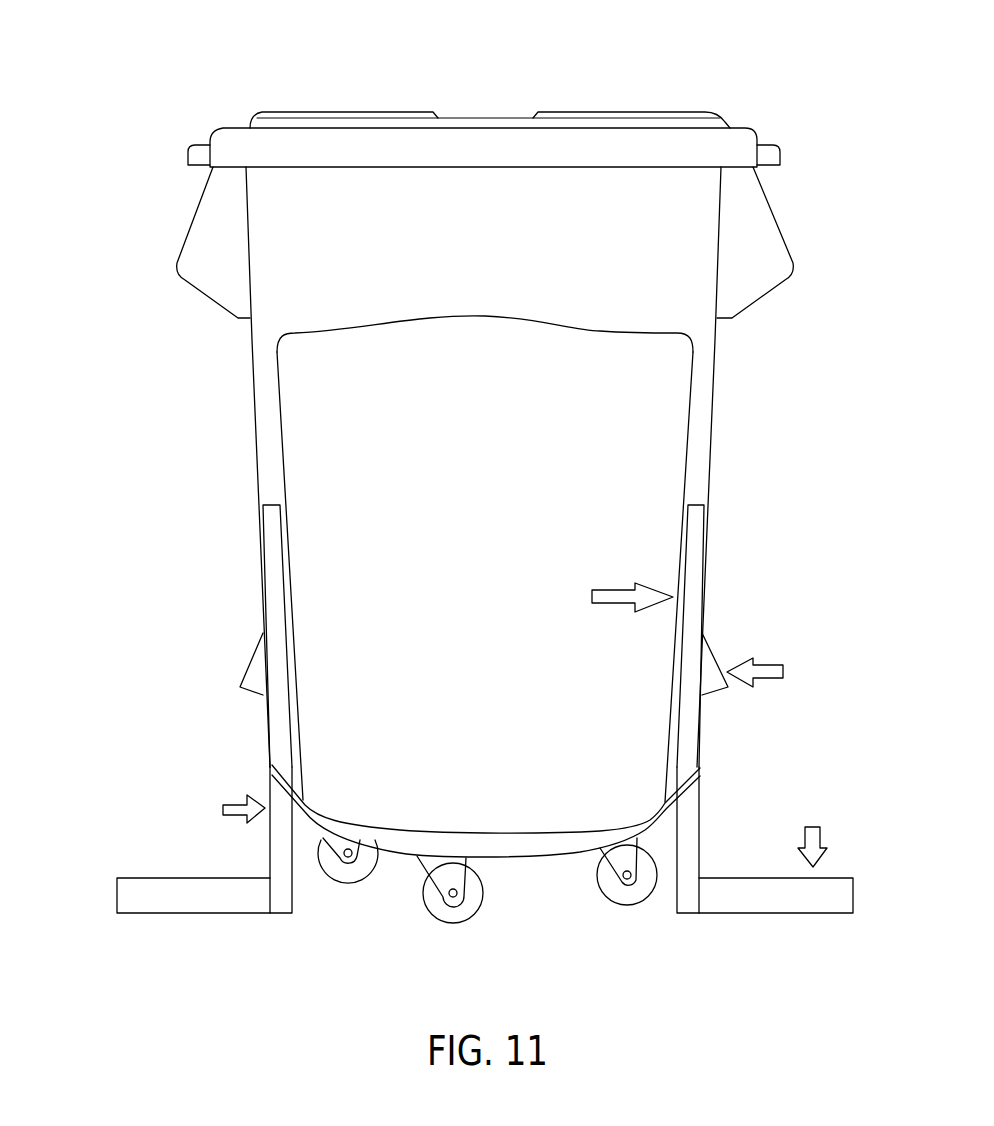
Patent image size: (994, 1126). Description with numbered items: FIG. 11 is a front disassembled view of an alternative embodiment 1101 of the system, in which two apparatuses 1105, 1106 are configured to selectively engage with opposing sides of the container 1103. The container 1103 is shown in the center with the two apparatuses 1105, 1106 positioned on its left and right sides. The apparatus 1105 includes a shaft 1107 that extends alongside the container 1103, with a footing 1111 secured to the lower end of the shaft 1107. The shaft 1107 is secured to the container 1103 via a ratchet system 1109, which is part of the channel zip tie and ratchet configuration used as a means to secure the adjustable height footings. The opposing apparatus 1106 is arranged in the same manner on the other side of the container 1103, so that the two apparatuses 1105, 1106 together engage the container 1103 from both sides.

The alternative embodiment 1101 is at (182, 57).
The container 1103 is at (257, 382).
The apparatus 1105 is at (123, 627).
The apparatus 1106 is at (857, 627).
The shaft 1107 is at (265, 558).
The ratchet system 1109 is at (253, 662).
The footing 1111 is at (117, 893).